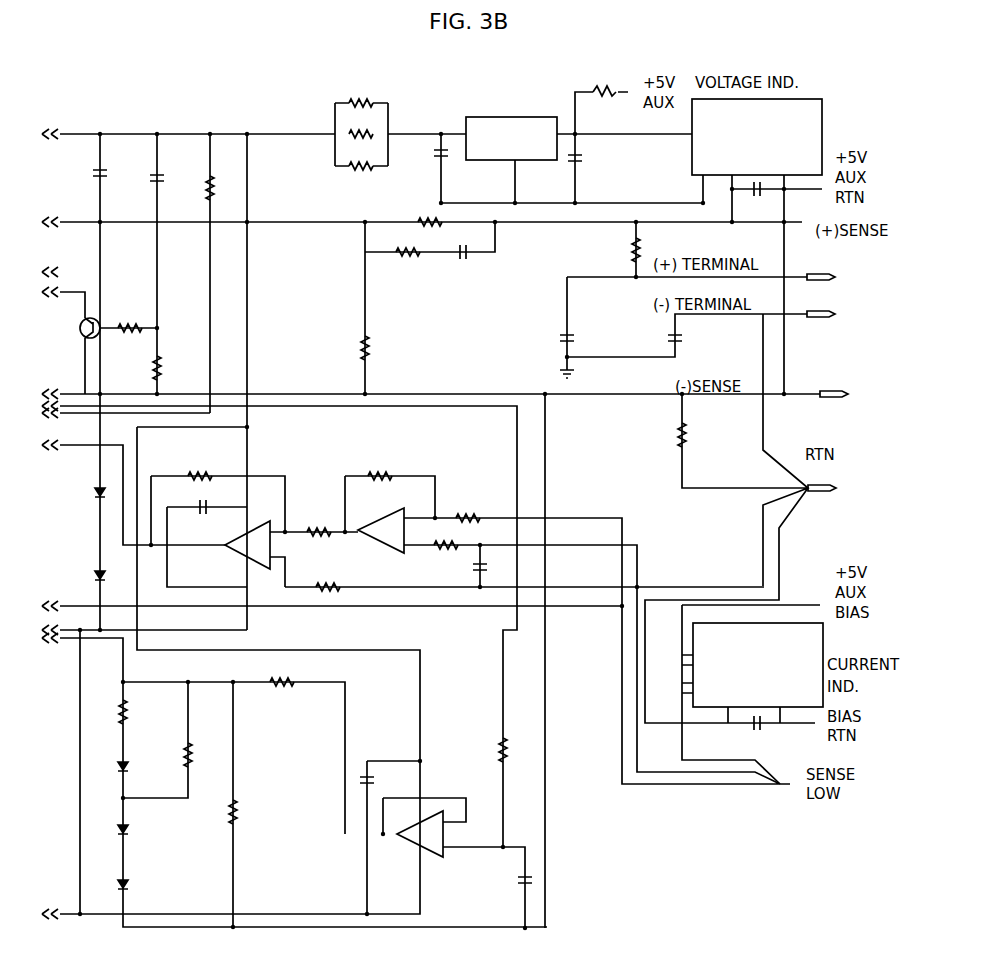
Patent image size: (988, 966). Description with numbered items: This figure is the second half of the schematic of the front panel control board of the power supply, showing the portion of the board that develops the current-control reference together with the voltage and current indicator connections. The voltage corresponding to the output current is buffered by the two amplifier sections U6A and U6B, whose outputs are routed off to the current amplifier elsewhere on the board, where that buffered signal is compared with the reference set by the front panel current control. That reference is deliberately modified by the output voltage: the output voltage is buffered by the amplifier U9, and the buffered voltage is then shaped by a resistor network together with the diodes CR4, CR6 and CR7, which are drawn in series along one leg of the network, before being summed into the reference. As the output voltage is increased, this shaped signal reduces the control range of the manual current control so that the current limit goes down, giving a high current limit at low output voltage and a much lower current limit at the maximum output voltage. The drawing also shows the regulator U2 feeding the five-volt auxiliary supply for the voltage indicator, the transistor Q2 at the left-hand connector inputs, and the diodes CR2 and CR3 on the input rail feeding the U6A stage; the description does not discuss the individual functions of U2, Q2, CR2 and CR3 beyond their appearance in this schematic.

The voltage regulator U2 is at (511, 129).
The transistor Q2 is at (102, 343).
The diode CR2 is at (76, 495).
The diode CR3 is at (76, 578).
The shaping diode CR4 is at (142, 768).
The shaping diode CR6 is at (142, 831).
The shaping diode CR7 is at (142, 886).
The buffer amplifier U6A is at (234, 545).
The buffer amplifier U6B is at (381, 521).
The output voltage buffer amplifier U9 is at (425, 817).